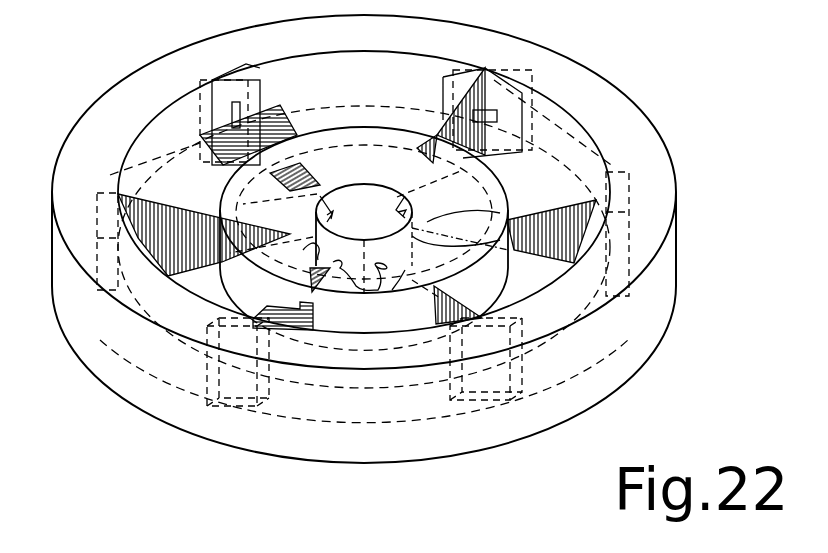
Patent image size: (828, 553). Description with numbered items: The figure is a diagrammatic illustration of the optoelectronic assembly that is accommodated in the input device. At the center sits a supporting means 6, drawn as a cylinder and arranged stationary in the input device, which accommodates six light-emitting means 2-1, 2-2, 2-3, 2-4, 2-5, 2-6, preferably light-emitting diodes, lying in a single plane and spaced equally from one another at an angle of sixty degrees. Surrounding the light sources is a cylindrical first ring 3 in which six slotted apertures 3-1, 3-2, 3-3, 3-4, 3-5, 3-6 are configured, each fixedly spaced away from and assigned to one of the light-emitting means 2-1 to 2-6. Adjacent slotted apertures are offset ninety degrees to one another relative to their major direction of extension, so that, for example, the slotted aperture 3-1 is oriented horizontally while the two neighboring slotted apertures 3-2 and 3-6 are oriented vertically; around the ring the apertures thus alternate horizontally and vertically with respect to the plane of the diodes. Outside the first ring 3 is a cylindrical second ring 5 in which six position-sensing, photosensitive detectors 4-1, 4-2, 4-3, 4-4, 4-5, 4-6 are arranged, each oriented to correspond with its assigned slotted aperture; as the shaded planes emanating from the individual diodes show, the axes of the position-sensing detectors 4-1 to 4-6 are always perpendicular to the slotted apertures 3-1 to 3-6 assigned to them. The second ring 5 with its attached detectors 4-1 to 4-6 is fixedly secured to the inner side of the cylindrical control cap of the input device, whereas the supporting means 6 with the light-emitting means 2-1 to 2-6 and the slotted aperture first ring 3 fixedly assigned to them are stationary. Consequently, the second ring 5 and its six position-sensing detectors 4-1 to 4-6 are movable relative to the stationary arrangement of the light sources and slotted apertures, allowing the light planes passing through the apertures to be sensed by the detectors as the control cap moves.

The light-emitting means 2-1 is at (320, 214).
The light-emitting means 2-2 is at (430, 204).
The light-emitting means 2-3 is at (494, 214).
The light-emitting means 2-4 is at (360, 266).
The light-emitting means 2-5 is at (404, 290).
The light-emitting means 2-6 is at (274, 254).
The first ring 3 is at (222, 272).
The slotted aperture 3-1 is at (300, 158).
The slotted aperture 3-2 is at (417, 147).
The slotted aperture 3-3 is at (532, 256).
The slotted aperture 3-4 is at (420, 322).
The slotted aperture 3-5 is at (306, 312).
The slotted aperture 3-6 is at (222, 236).
The position-sensing detector 4-1 is at (212, 125).
The position-sensing detector 4-2 is at (505, 106).
The position-sensing detector 4-3 is at (618, 210).
The position-sensing detector 4-4 is at (530, 368).
The position-sensing detector 4-5 is at (207, 378).
The position-sensing detector 4-6 is at (108, 272).
The second ring 5 is at (112, 362).
The supporting means 6 is at (373, 198).